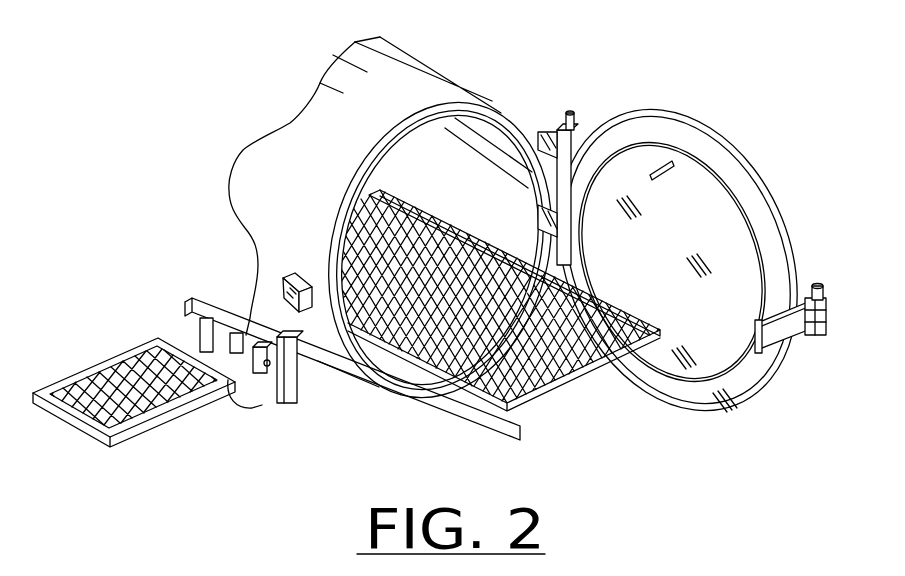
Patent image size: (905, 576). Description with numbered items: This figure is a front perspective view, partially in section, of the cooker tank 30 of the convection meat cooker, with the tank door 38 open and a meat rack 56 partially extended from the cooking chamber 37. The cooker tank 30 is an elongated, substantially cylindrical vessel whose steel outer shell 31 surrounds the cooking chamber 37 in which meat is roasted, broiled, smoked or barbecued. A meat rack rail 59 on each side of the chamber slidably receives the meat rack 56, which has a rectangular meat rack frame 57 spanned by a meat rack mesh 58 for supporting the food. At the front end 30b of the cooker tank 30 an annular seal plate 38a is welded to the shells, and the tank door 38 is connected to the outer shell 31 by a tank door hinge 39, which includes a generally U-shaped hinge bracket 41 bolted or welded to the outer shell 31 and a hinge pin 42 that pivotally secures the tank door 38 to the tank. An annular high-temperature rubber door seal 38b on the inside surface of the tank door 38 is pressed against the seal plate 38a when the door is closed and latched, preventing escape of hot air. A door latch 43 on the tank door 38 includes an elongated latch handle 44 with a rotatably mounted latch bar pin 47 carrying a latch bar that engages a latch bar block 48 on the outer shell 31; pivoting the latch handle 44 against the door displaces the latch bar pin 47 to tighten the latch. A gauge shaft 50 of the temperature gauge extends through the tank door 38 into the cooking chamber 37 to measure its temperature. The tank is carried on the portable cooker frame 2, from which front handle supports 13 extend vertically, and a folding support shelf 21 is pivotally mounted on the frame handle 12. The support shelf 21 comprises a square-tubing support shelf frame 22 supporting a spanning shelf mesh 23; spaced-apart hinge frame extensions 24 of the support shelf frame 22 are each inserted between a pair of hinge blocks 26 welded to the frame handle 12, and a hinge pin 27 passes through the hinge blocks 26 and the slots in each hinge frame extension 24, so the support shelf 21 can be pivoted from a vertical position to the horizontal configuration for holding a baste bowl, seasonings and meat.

The portable cooker frame 2 is at (321, 406).
The frame handle 12 is at (193, 308).
The front handle supports 13 is at (288, 381).
The folding support shelf 21 is at (127, 408).
The support shelf frame 22 is at (158, 408).
The shelf mesh 23 is at (90, 370).
The hinge frame extensions 24 is at (260, 342).
The hinge blocks 26 is at (240, 318).
The hinge pin 27 is at (268, 368).
The cooker tank 30 is at (431, 58).
The front end 30b is at (433, 112).
The outer shell 31 is at (354, 48).
The cooking chamber 37 is at (432, 168).
The tank door 38 is at (678, 225).
The seal plate 38a is at (483, 100).
The door seal 38b is at (712, 178).
The tank door hinge 39 is at (585, 128).
The hinge bracket 41 is at (556, 140).
The hinge pin 42 is at (578, 128).
The door latch 43 is at (806, 284).
The latch handle 44 is at (814, 330).
The latch bar pin 47 is at (824, 327).
The latch bar block 48 is at (302, 275).
The gauge shaft 50 is at (660, 176).
The meat rack 56 is at (444, 324).
The meat rack frame 57 is at (490, 412).
The meat rack mesh 58 is at (447, 384).
The meat rack rail 59 is at (463, 220).